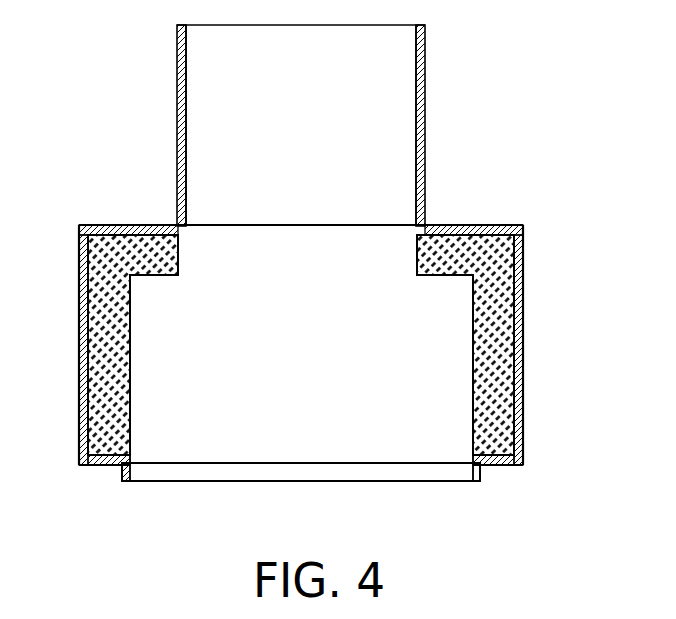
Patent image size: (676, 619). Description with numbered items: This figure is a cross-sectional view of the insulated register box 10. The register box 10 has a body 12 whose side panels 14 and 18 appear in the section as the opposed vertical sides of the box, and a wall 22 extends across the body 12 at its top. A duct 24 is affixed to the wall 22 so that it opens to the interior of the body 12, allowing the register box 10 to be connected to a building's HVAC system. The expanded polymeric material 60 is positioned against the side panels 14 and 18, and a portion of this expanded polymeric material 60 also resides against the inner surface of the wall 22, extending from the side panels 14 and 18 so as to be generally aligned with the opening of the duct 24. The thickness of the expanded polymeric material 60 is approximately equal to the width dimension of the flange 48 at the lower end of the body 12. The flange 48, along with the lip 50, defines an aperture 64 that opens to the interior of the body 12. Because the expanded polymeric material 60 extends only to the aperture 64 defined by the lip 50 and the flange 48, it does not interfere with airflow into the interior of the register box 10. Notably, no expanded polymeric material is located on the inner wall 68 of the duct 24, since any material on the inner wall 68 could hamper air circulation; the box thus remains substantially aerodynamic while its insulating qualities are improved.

The insulated register box 10 is at (317, 284).
The body 12 is at (305, 310).
The side panel 14 is at (523, 392).
The side panel 18 is at (80, 347).
The wall 22 is at (470, 226).
The duct 24 is at (261, 125).
The flange 48 is at (507, 467).
The lip 50 is at (137, 475).
The expanded polymeric material 60 is at (163, 263).
The aperture 64 is at (327, 499).
The inner wall of the duct 68 is at (186, 97).